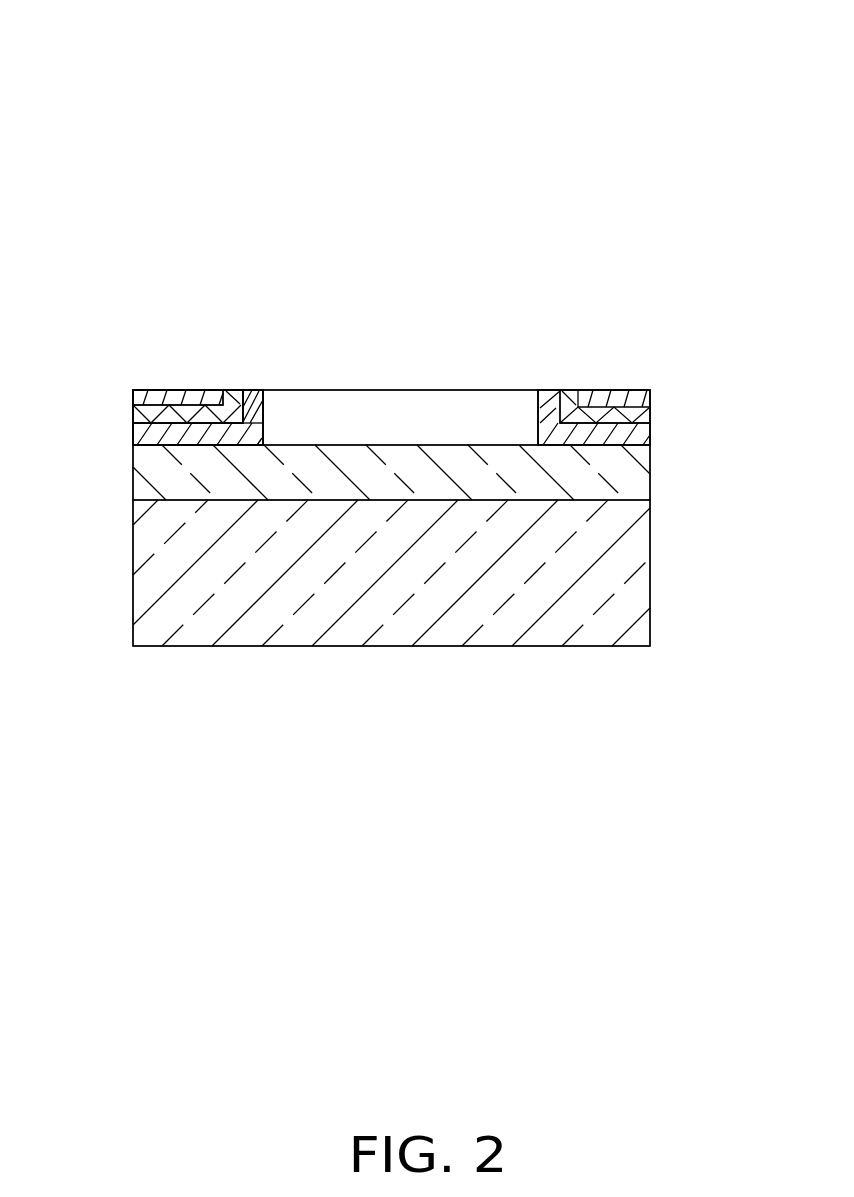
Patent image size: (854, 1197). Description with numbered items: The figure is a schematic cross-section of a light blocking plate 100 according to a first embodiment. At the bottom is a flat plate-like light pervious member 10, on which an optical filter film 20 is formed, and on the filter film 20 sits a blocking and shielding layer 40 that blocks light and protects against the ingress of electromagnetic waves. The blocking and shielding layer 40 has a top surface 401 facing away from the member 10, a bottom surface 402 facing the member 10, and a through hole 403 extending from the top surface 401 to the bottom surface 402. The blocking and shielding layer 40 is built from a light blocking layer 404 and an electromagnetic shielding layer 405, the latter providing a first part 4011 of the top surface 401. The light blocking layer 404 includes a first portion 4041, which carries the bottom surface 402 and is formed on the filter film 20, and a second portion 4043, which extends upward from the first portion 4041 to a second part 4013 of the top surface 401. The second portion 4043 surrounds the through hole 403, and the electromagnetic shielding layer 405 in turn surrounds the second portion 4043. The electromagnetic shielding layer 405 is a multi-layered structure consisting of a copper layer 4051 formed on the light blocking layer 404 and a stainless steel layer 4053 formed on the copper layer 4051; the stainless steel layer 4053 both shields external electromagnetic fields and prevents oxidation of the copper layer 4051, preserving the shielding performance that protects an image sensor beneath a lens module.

The light blocking plate 100 is at (198, 95).
The light pervious member 10 is at (637, 537).
The optical filter film 20 is at (627, 487).
The bottom surface 402 is at (173, 447).
The through hole 403 is at (410, 412).
The blocking and shielding layer 40 is at (312, 262).
The electromagnetic shielding layer 405 is at (83, 320).
The stainless steel layer 4053 is at (153, 390).
The copper layer 4051 is at (233, 390).
The light blocking layer 404 is at (243, 320).
The second portion 4043 is at (253, 408).
The first portion 4041 is at (207, 437).
The top surface 401 is at (540, 270).
The second part of the top surface 4013 is at (548, 390).
The first part of the top surface 4011 is at (623, 390).